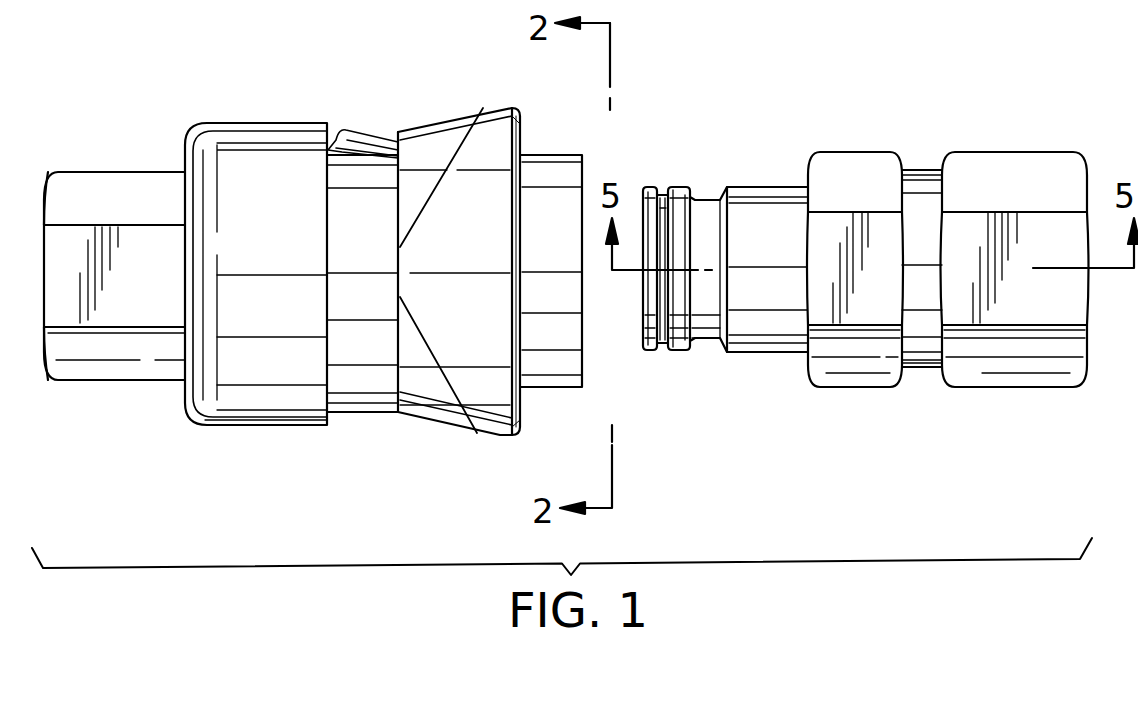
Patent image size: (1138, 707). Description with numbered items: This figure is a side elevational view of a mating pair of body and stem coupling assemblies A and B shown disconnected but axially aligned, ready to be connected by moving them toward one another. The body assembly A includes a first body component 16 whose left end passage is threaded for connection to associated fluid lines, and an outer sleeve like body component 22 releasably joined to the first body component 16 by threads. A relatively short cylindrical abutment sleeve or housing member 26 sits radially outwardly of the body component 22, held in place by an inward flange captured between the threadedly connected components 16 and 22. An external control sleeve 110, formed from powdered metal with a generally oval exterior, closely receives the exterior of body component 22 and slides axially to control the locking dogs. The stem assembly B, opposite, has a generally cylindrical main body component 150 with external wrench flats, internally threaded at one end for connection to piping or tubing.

The first body component 16 is at (85, 365).
The abutment sleeve or housing member 26 is at (233, 397).
The external control sleeve 110 is at (485, 108).
The outer sleeve like body component 22 is at (553, 178).
The main body component 150 is at (928, 368).
The body coupling assembly A is at (272, 112).
The stem coupling assembly B is at (753, 163).